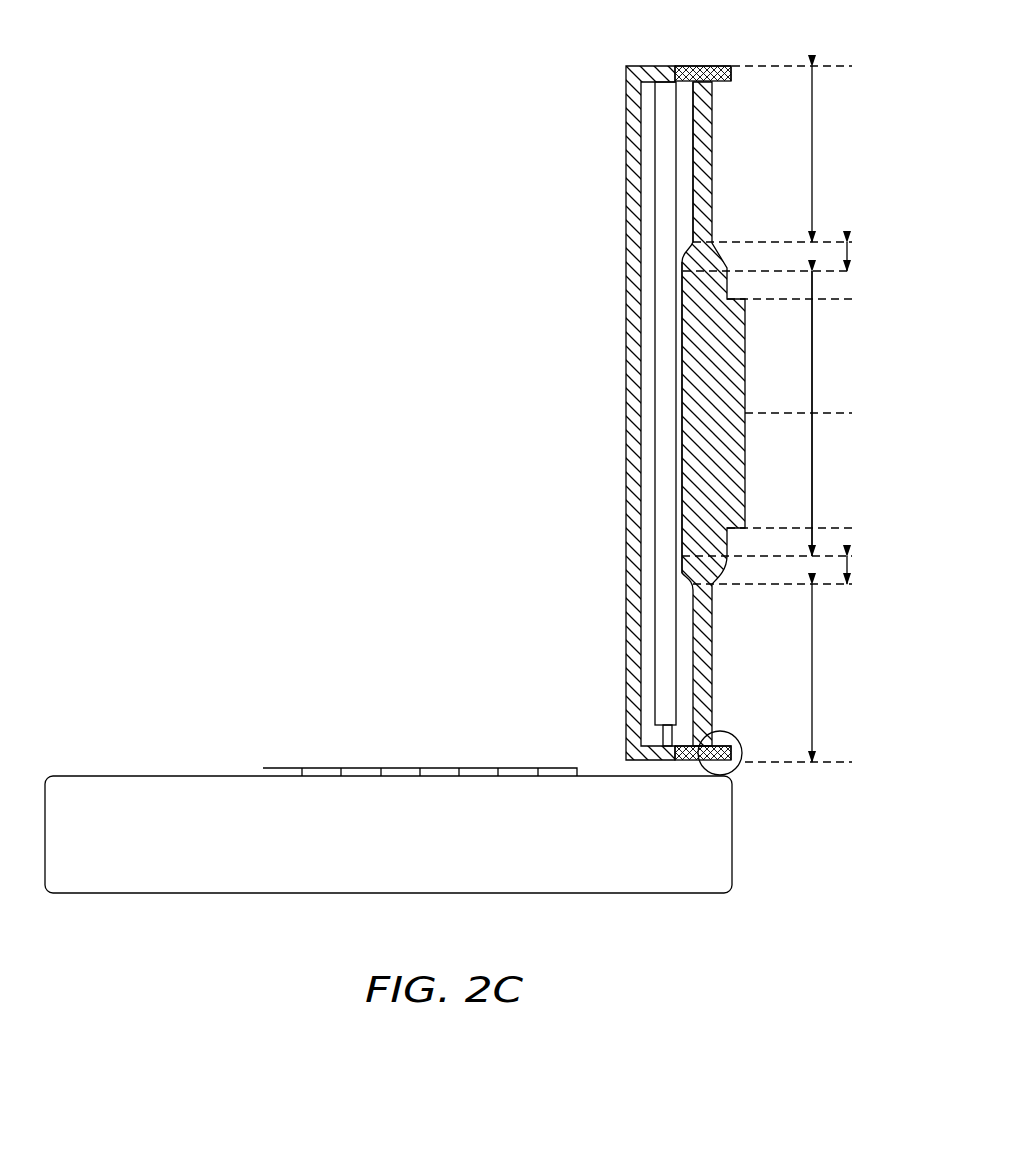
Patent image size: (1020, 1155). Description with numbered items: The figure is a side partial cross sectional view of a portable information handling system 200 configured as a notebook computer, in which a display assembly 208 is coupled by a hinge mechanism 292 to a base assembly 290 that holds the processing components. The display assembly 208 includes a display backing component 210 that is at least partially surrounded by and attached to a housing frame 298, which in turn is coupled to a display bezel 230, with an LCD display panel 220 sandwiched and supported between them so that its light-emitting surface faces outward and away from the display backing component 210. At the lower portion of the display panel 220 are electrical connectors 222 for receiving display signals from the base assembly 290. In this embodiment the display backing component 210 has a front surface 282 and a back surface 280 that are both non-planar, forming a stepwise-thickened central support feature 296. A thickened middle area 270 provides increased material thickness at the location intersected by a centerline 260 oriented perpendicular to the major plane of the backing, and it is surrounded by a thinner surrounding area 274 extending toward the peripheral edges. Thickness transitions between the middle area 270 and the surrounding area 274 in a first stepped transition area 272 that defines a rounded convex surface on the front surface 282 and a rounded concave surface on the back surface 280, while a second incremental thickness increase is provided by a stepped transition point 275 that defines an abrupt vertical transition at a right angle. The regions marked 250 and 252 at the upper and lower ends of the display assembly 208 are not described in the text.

The portable information handling system 200 is at (206, 85).
The display assembly 208 is at (730, 48).
The display backing component 210 is at (743, 414).
The LCD display panel 220 is at (665, 128).
The electrical connectors 222 is at (663, 735).
The display bezel 230 is at (634, 152).
The upper end portion 250 is at (735, 66).
The lower end portion 252 is at (738, 765).
The centerline 260 is at (843, 413).
The thickened middle area 270 is at (812, 352).
The first stepped transition area 272 is at (847, 242).
The thinner surrounding area 274 is at (818, 142).
The stepped transition point 275 is at (835, 300).
The back surface 280 is at (713, 160).
The front surface 282 is at (690, 208).
The base assembly 290 is at (85, 775).
The hinge mechanism 292 is at (742, 757).
The stepwise-thickened central support feature 296 is at (702, 468).
The housing frame 298 is at (735, 66).